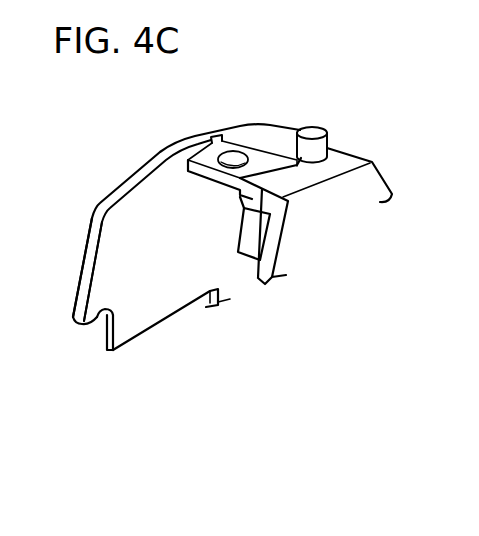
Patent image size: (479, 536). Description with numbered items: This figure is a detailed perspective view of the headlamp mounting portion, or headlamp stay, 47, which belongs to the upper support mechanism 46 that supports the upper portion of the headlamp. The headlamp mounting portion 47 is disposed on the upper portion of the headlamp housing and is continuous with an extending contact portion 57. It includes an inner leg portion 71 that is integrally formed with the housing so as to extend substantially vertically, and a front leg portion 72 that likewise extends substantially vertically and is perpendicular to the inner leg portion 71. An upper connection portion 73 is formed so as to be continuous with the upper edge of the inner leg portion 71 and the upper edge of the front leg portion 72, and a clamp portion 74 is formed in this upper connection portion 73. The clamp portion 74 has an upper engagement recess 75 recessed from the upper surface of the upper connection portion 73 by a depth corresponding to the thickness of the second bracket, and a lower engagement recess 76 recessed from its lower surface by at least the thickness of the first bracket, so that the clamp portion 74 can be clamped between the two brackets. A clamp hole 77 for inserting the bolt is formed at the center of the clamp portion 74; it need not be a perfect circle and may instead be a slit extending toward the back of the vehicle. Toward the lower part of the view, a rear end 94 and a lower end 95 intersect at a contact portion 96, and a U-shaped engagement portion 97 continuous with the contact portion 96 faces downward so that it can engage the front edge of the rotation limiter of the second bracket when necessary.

The upper support mechanism 46 is at (297, 116).
The headlamp mounting portion 47 is at (345, 204).
The extending contact portion 57 is at (156, 217).
The inner leg portion 71 is at (263, 285).
The front leg portion 72 is at (391, 175).
The upper connection portion 73 is at (311, 158).
The clamp portion 74 is at (210, 153).
The upper engagement recess 75 is at (262, 150).
The lower engagement recess 76 is at (238, 193).
The clamp hole 77 is at (233, 152).
The rear end 94 is at (84, 272).
The lower end 95 is at (160, 326).
The contact portion 96 is at (85, 324).
The engagement portion 97 is at (108, 328).